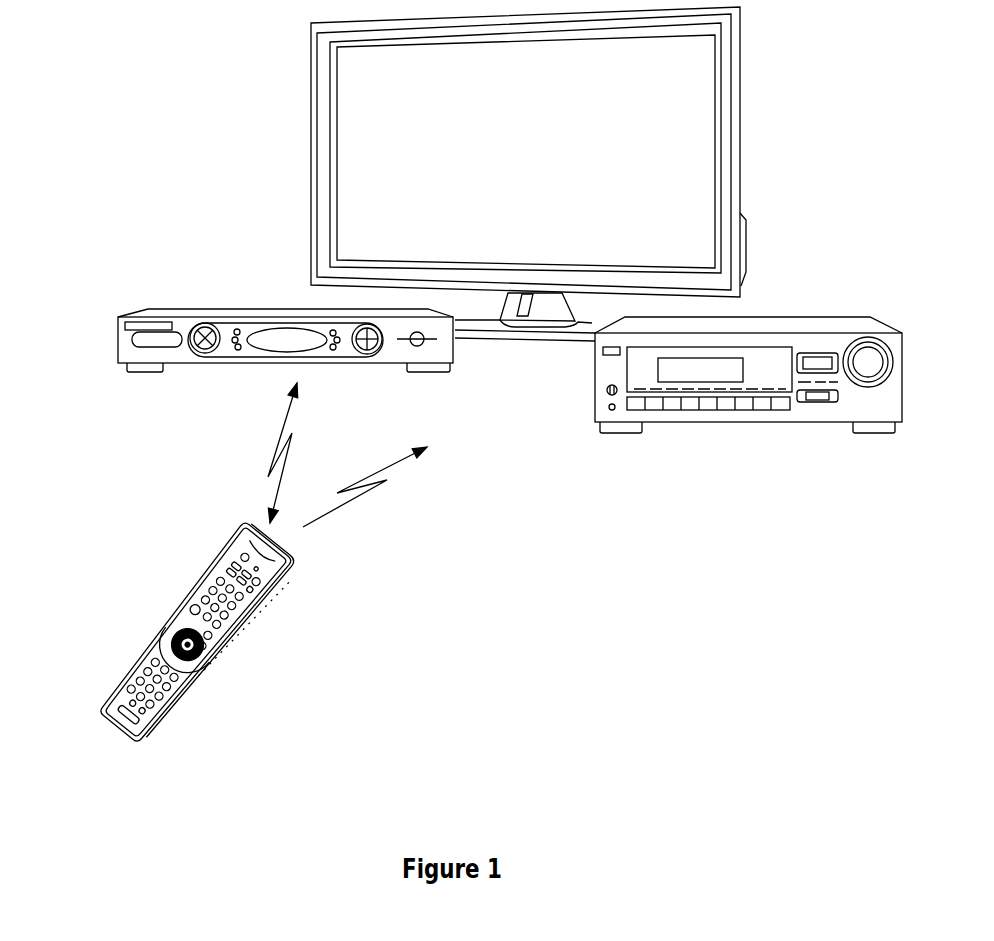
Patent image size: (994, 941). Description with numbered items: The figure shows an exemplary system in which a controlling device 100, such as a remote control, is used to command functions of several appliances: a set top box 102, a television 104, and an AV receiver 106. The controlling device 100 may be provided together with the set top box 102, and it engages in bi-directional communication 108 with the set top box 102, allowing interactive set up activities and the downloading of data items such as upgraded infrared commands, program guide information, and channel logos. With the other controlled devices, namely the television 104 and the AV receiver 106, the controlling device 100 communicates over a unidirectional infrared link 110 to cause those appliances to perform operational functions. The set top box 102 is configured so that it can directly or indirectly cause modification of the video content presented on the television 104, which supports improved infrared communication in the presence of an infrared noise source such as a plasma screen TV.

The controlling device 100 is at (220, 665).
The set top box 102 is at (173, 312).
The television 104 is at (745, 60).
The AV receiver 106 is at (782, 427).
The bi-directional communication 108 is at (262, 440).
The unidirectional infrared link 110 is at (402, 478).